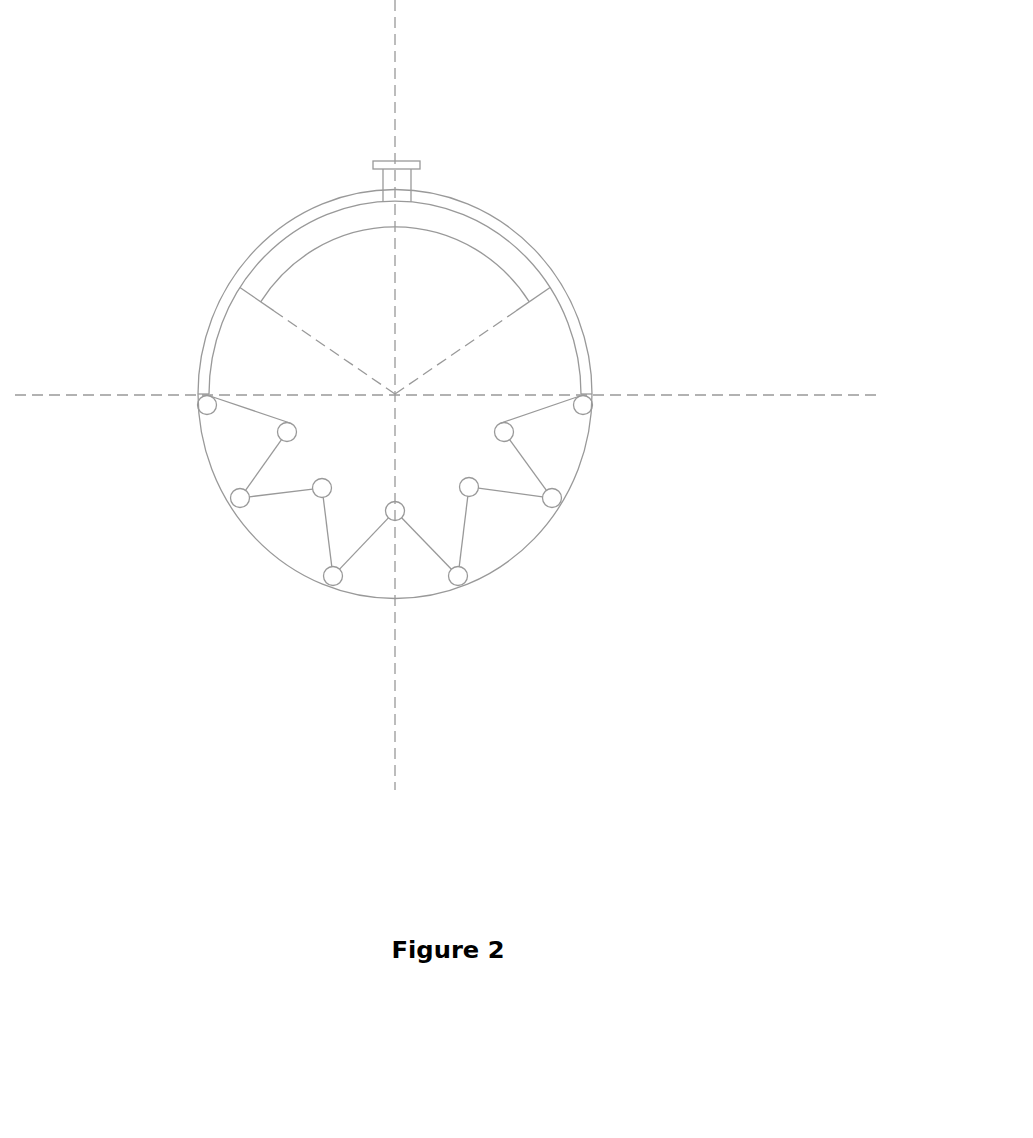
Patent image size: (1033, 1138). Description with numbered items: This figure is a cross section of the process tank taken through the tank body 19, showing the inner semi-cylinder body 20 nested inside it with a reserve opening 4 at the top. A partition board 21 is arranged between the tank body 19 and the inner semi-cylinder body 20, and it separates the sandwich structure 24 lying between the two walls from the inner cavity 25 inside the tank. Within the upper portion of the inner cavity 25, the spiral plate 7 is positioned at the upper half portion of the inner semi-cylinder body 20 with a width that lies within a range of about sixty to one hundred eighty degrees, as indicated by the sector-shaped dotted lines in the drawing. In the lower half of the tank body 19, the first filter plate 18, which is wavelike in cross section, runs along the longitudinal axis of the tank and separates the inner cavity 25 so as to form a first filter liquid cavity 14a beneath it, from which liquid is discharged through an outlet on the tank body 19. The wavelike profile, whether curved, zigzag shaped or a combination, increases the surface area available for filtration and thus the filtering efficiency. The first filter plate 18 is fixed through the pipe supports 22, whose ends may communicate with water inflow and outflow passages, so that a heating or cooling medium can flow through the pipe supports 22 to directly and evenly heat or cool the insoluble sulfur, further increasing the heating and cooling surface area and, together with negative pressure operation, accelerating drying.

The reserve opening 4 is at (382, 162).
The sandwich structure 24 is at (468, 210).
The tank body 19 is at (510, 225).
The inner semi-cylinder body 20 is at (540, 286).
The inner cavity 25 is at (352, 293).
The spiral plate 7 is at (282, 268).
The partition board 21 is at (205, 397).
The pipe support 22 is at (317, 496).
The first filter plate 18 is at (247, 409).
The first filter liquid cavity 14a is at (487, 552).